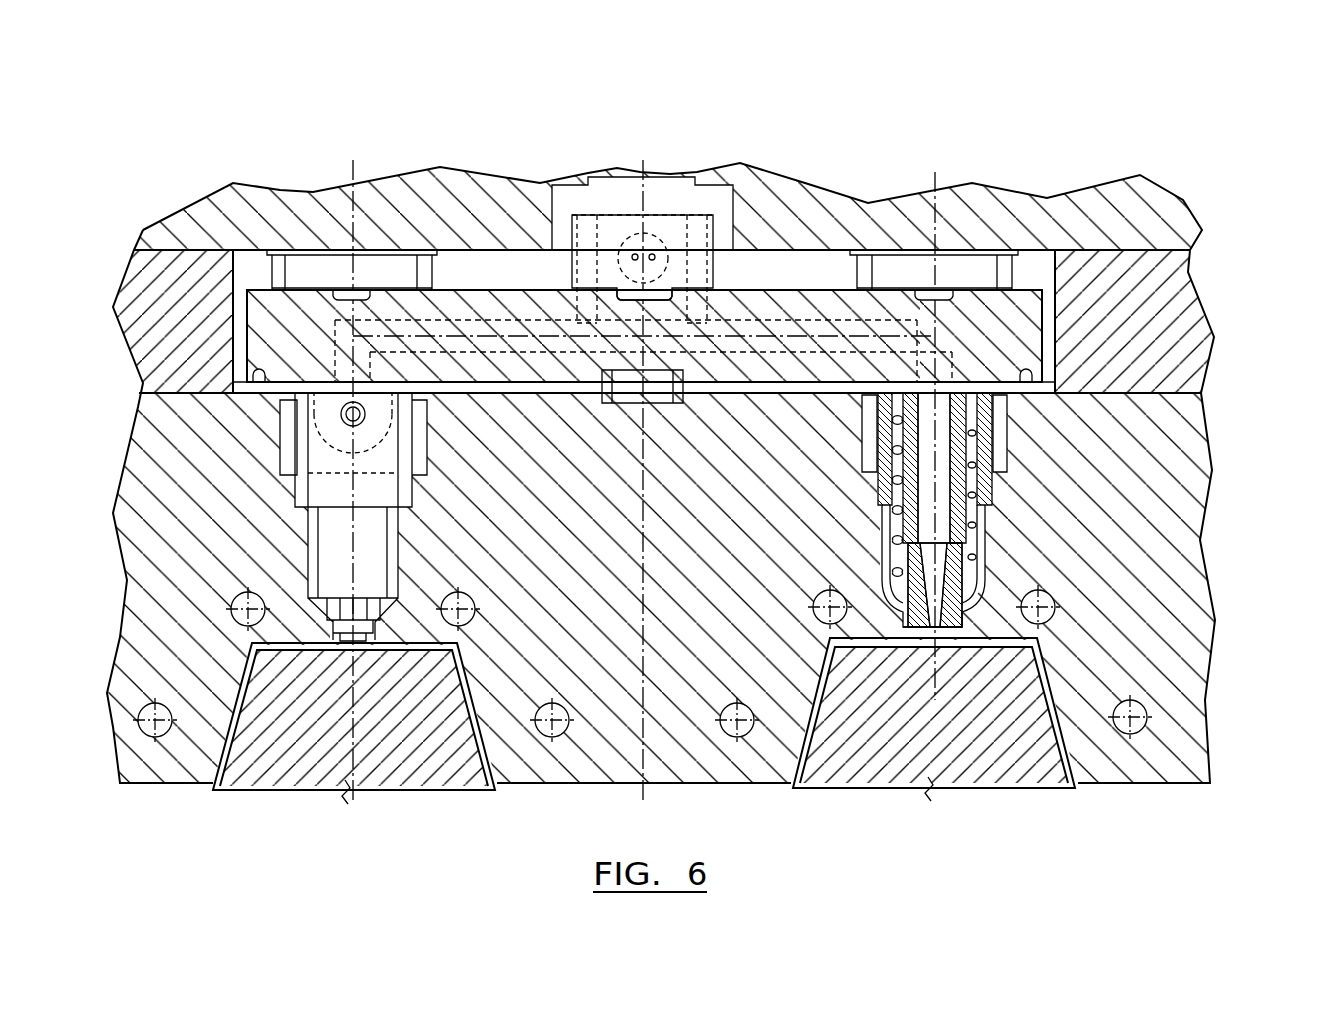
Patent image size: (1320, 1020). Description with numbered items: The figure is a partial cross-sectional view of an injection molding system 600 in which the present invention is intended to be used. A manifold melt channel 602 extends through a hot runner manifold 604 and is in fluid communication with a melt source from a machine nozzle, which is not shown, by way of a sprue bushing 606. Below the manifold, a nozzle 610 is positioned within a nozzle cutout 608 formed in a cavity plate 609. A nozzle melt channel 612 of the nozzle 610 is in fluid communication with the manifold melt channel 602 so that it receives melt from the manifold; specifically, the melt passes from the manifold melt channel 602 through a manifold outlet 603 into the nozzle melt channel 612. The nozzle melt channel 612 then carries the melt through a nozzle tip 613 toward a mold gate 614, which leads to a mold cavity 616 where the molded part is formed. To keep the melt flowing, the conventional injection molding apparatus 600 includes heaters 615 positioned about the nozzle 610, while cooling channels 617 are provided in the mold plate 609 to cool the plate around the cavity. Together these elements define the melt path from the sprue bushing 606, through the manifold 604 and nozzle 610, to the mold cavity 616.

The injection molding system 600 is at (667, 442).
The manifold melt channel 602 is at (783, 330).
The manifold outlet 603 is at (1005, 398).
The hot runner manifold 604 is at (260, 340).
The sprue bushing 606 is at (680, 187).
The nozzle cutout 608 is at (933, 571).
The cavity plate 609 is at (698, 473).
The nozzle 610 is at (977, 513).
The nozzle melt channel 612 is at (940, 452).
The nozzle tip 613 is at (953, 640).
The mold gate 614 is at (937, 647).
The heaters 615 is at (968, 560).
The mold cavity 616 is at (805, 745).
The cooling channels 617 is at (1142, 702).